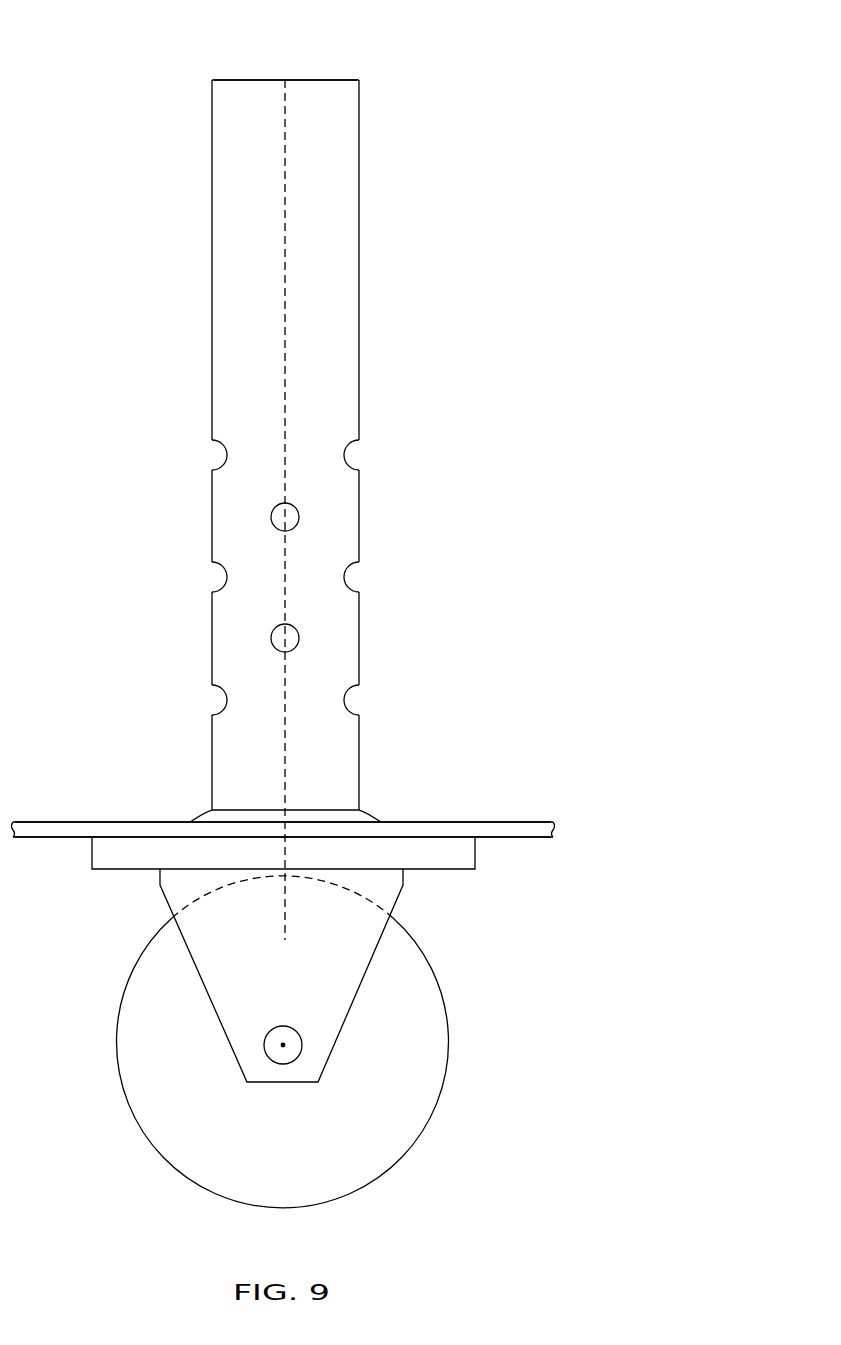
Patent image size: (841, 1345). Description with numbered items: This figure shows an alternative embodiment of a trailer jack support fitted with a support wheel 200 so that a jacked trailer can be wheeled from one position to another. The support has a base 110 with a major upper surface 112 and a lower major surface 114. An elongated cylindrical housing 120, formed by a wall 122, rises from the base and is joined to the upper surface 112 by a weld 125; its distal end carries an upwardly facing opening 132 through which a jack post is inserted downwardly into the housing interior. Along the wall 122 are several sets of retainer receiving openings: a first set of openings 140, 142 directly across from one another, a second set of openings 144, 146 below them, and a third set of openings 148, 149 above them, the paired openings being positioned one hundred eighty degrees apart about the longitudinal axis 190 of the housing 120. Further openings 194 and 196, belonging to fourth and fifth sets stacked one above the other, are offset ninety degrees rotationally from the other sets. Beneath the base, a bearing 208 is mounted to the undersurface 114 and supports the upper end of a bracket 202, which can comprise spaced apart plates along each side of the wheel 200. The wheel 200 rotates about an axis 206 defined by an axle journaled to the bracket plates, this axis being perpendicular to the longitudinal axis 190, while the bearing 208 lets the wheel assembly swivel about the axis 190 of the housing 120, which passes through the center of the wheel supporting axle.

The base 110 is at (511, 814).
The major upper surface 112 is at (432, 822).
The lower major surface 114 is at (505, 838).
The housing 120 is at (366, 306).
The wall 122 is at (361, 233).
The weld 125 is at (363, 816).
The upwardly facing opening 132 is at (324, 71).
The retainer receiving opening 140 is at (345, 583).
The retainer receiving opening 142 is at (225, 583).
The retainer receiving opening 144 is at (345, 705).
The retainer receiving opening 146 is at (225, 705).
The retainer receiving opening 148 is at (345, 458).
The retainer receiving opening 149 is at (225, 458).
The longitudinal axis 190 is at (285, 407).
The opening 194 is at (288, 640).
The opening 196 is at (288, 518).
The support wheel 200 is at (430, 1023).
The bracket 202 is at (348, 968).
The axis 206 is at (283, 1045).
The bearing 208 is at (440, 860).